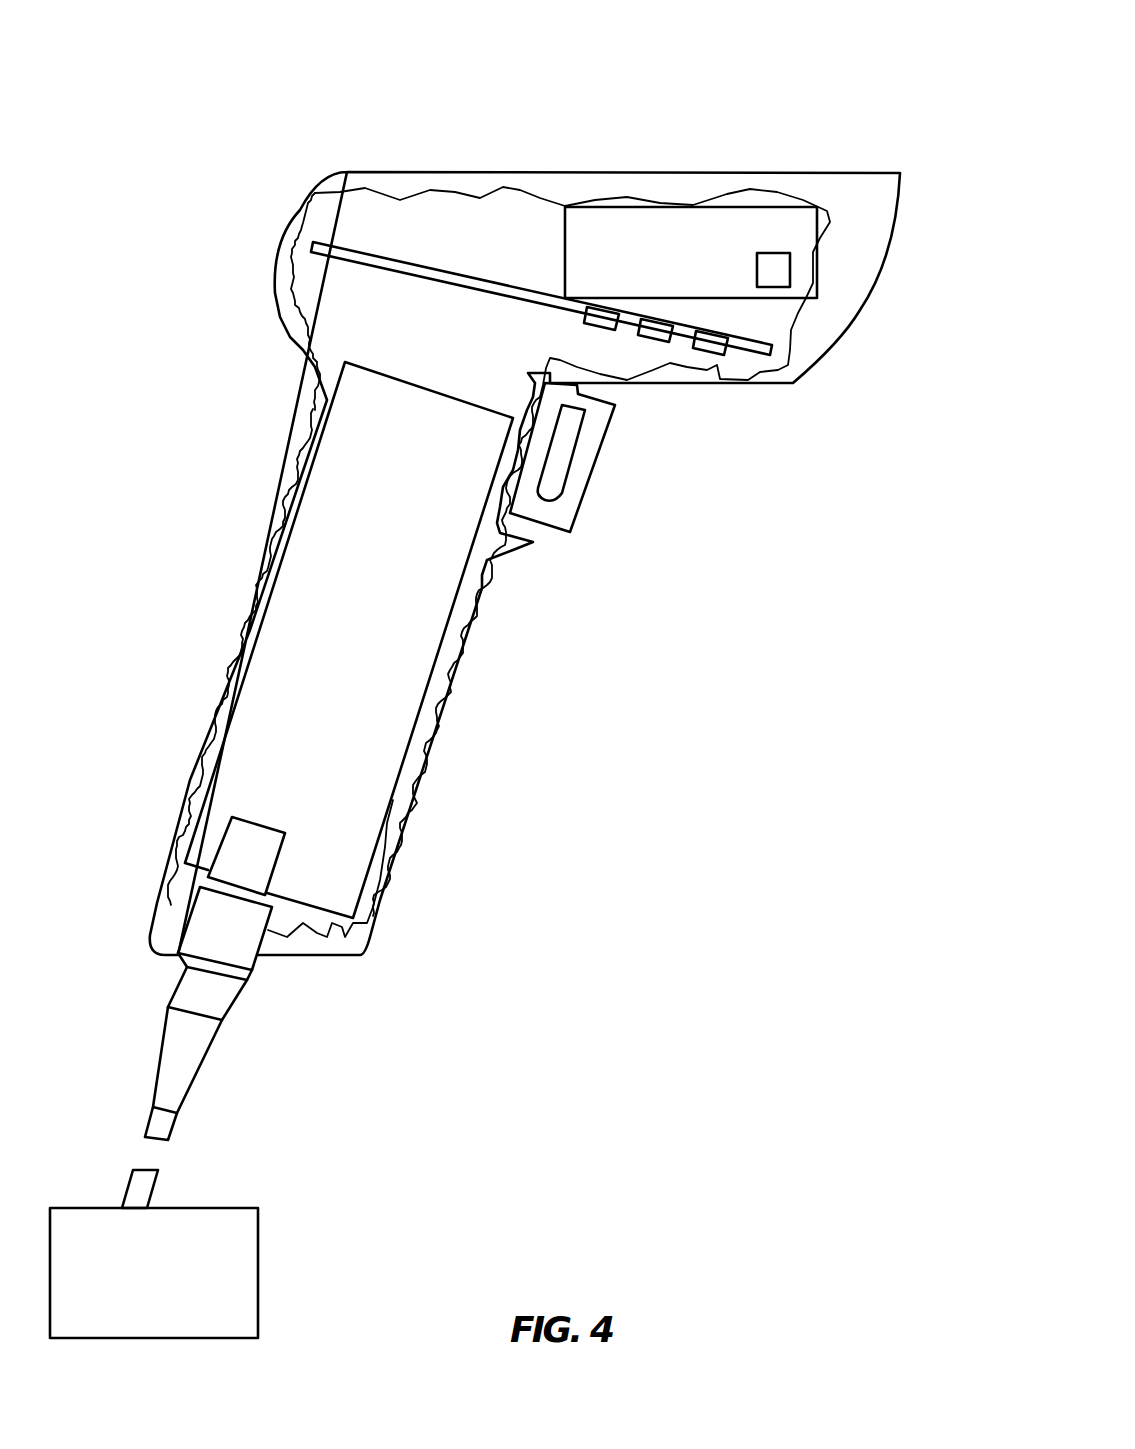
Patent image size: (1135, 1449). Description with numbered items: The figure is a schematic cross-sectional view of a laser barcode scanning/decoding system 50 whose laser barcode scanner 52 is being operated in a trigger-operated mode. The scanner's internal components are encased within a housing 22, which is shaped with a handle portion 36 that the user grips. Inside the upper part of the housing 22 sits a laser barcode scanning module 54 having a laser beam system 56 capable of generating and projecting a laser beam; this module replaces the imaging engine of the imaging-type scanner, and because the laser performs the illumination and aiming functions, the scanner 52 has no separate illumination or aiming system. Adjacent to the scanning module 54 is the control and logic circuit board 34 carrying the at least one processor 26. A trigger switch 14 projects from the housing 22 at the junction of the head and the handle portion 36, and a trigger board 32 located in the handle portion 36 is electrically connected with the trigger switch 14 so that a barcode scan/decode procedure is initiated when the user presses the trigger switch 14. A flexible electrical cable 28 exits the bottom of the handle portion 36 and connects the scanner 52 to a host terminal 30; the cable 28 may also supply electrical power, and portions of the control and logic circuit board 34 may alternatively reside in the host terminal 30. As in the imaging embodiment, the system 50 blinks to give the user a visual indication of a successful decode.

The laser barcode scanning/decoding system 50 is at (555, 53).
The laser barcode scanner 52 is at (853, 103).
The housing 22 is at (597, 170).
The laser barcode scanning module 54 is at (760, 200).
The laser beam system 56 is at (779, 288).
The control and logic circuit (CLC) board 34 is at (357, 248).
The processor 26 is at (713, 355).
The trigger switch 14 is at (578, 483).
The trigger board 32 is at (403, 708).
The handle portion 36 is at (393, 860).
The flexible electrical cable 28 is at (203, 1073).
The host terminal 30 is at (259, 1240).